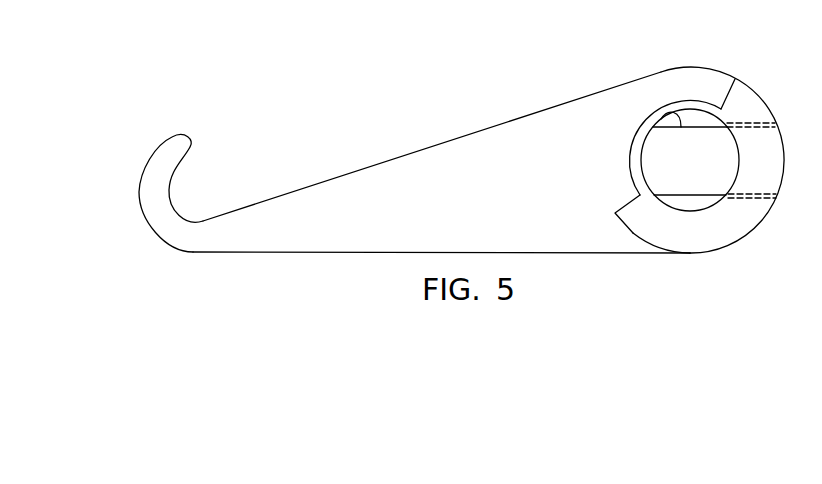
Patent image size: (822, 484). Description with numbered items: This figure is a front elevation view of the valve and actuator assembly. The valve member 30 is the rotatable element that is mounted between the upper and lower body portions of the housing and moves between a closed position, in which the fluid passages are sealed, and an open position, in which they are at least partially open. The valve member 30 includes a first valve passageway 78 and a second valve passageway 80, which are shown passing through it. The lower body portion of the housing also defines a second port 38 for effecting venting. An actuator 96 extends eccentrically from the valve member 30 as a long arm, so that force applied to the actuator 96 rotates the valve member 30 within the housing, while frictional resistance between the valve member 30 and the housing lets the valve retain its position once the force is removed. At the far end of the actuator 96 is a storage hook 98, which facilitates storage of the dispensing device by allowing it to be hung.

The valve member 30 is at (651, 94).
The actuator 96 is at (457, 122).
The storage hook 98 is at (191, 142).
The second port 38 is at (682, 202).
The second valve passageway 80 is at (670, 113).
The first valve passageway 78 is at (778, 123).